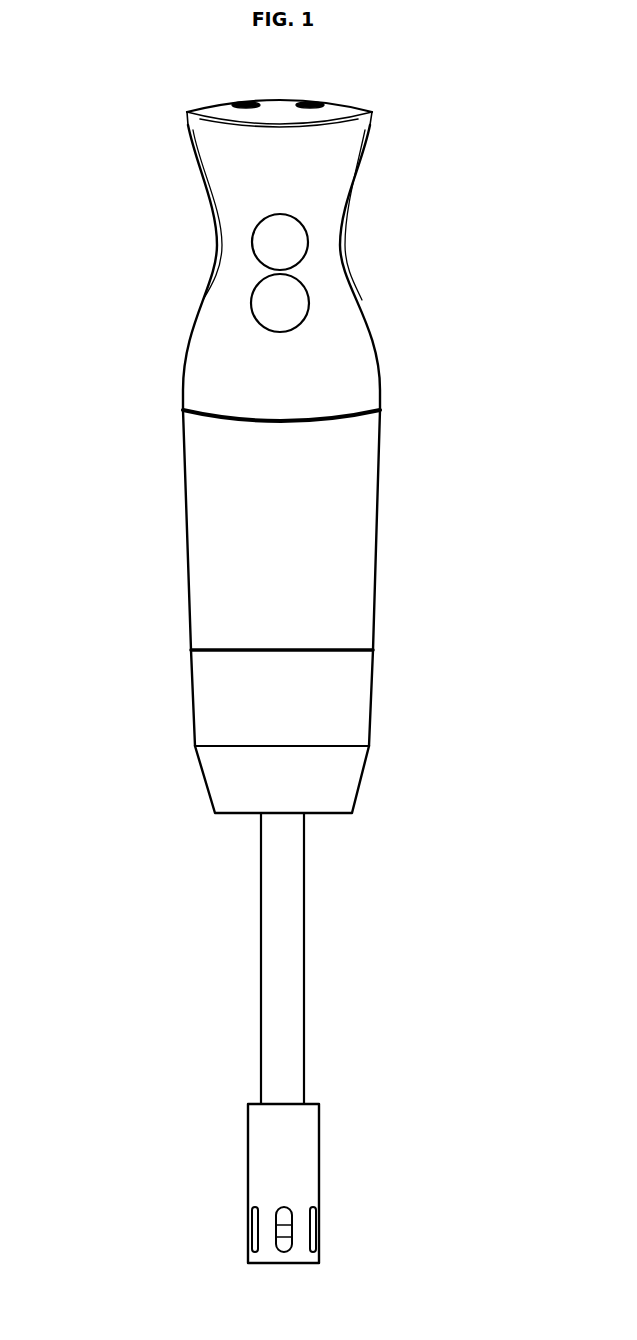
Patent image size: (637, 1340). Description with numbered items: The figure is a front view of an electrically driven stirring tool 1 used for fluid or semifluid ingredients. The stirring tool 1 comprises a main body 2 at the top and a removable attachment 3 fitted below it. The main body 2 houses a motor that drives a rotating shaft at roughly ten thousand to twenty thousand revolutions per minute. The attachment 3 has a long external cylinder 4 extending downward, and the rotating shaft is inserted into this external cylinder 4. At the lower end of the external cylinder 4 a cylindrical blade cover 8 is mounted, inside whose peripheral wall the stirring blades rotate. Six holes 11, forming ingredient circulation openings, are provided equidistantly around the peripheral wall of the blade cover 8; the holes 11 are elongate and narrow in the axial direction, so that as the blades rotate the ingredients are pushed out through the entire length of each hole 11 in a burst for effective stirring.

The stirring tool 1 is at (165, 466).
The main body 2 is at (380, 433).
The removable attachment 3 is at (363, 770).
The external cylinder 4 is at (304, 948).
The blade cover 8 is at (311, 1183).
The holes 11 is at (316, 1232).